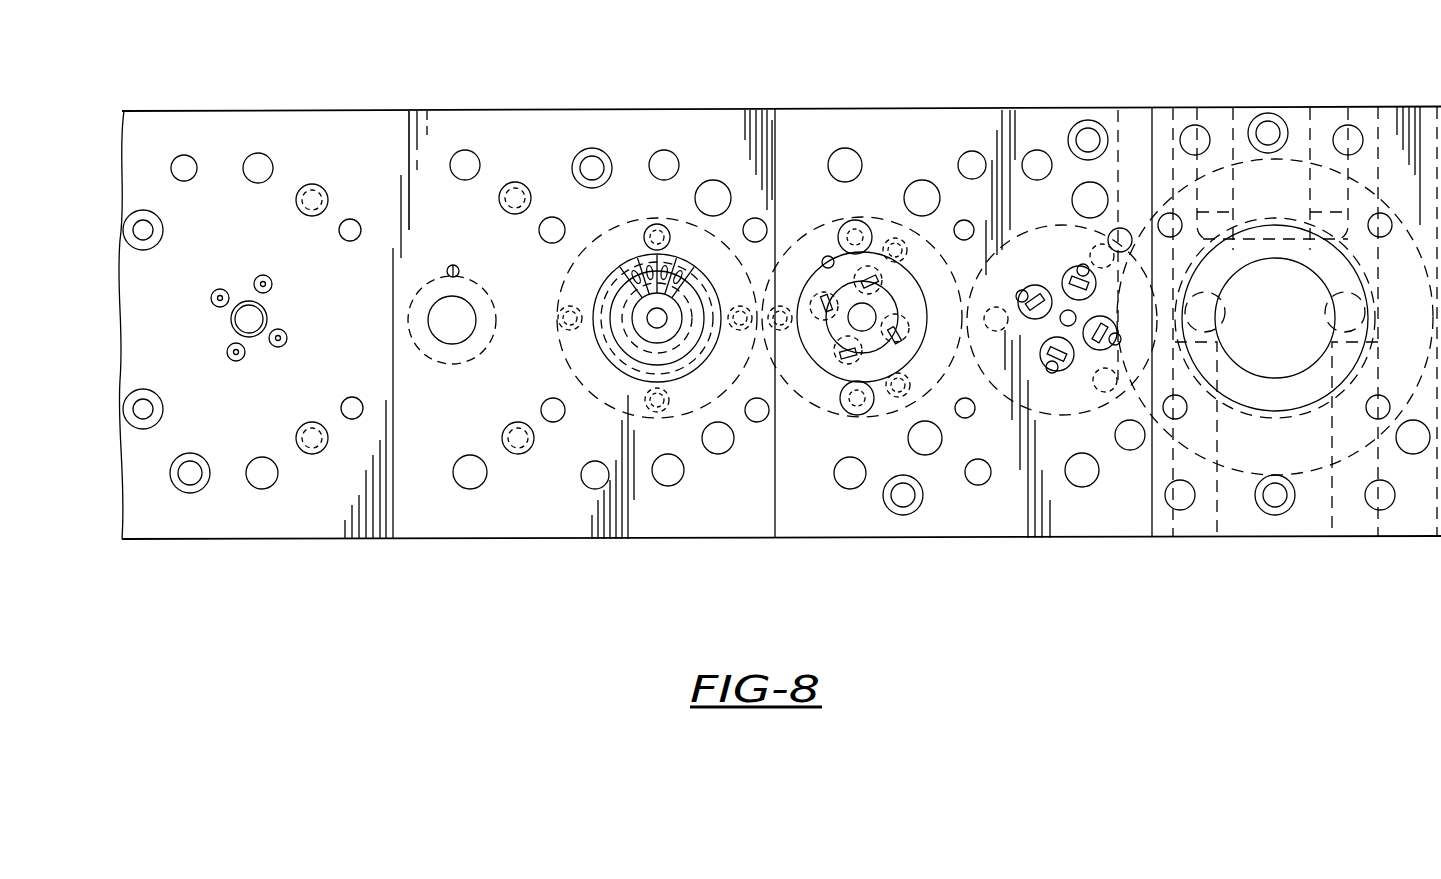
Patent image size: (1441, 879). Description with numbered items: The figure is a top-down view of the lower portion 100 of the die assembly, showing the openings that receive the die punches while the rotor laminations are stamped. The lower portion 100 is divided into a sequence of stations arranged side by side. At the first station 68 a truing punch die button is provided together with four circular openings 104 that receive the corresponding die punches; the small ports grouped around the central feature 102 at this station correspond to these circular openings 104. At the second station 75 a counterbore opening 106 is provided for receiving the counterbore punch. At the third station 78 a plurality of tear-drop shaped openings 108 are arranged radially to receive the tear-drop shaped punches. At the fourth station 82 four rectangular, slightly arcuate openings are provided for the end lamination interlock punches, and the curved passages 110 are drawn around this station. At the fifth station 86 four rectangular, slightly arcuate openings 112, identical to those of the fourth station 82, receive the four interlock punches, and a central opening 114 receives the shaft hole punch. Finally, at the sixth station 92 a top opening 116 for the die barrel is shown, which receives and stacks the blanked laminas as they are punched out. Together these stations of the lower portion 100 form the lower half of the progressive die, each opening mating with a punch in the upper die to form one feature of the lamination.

The first station 68 is at (399, 97).
The second station 75 is at (575, 97).
The third station 78 is at (778, 97).
The fourth station 82 is at (946, 555).
The fifth station 86 is at (1155, 555).
The sixth station 92 is at (1415, 555).
The lower portion of the die assembly 100 is at (905, 107).
The central port 102 is at (263, 309).
The circular openings 104 is at (259, 278).
The counterbore opening 106 is at (468, 333).
The tear-drop shaped openings 108 is at (660, 264).
The curved passages 110 is at (868, 294).
The rectangular, slightly arcuate openings 112 is at (1080, 266).
The central opening 114 is at (1066, 310).
The top opening 116 is at (1322, 285).